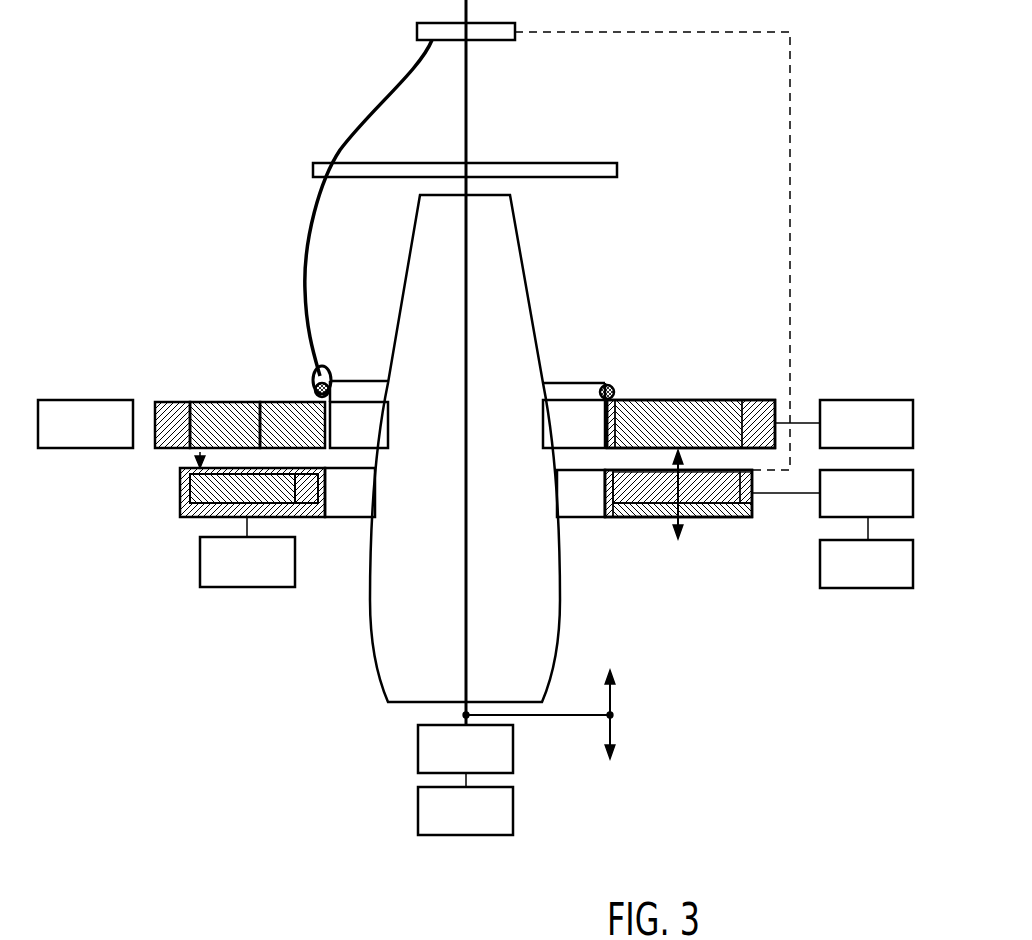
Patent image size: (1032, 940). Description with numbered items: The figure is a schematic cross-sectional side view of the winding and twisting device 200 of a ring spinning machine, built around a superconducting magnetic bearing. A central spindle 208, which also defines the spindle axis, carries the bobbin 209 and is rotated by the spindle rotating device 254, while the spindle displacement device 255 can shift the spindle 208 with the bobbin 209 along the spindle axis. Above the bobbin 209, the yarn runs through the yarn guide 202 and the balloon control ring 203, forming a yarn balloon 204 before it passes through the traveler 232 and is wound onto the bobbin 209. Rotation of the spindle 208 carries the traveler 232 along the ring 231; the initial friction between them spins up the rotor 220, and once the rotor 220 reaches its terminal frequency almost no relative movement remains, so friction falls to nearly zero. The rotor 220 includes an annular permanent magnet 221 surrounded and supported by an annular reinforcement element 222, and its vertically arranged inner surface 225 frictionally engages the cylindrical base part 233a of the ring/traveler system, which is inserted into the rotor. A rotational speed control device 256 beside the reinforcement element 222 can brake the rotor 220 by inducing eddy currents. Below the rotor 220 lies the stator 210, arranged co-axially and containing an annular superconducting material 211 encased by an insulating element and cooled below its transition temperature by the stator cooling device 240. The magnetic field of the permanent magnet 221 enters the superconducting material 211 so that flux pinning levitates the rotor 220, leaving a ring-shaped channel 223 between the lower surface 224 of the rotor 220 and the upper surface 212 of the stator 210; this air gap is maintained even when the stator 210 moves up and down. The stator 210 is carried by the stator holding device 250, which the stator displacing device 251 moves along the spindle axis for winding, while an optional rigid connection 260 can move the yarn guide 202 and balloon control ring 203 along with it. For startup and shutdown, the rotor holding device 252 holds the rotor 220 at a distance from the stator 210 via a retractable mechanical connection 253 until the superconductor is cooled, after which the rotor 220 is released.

The winding and twisting device 200 is at (154, 31).
The yarn guide 202 is at (417, 33).
The balloon control ring 203 is at (592, 163).
The yarn balloon 204 is at (312, 233).
The spindle 208 is at (468, 122).
The bobbin 209 is at (513, 265).
The stator 210 is at (172, 521).
The superconducting material 211 is at (180, 488).
The upper surface of the stator 212 is at (306, 517).
The rotor 220 is at (706, 388).
The annular permanent magnet 221 is at (200, 402).
The annular reinforcement element 222 is at (163, 402).
The ring-shaped channel 223 is at (190, 451).
The lower surface of the rotor 224 is at (257, 430).
The inner surface of the rotor 225 is at (567, 405).
The ring 231 is at (614, 384).
The traveler 232 is at (332, 364).
The cylindrical base part 233a is at (607, 430).
The stator cooling device 240 is at (200, 568).
The stator holding device 250 is at (820, 510).
The stator displacing device 251 is at (820, 574).
The rotor holding device 252 is at (893, 400).
The mechanical connection 253 is at (805, 422).
The spindle rotating device 254 is at (418, 741).
The spindle displacement device 255 is at (418, 803).
The rotational speed control device 256 is at (44, 400).
The rigid connection 260 is at (792, 122).